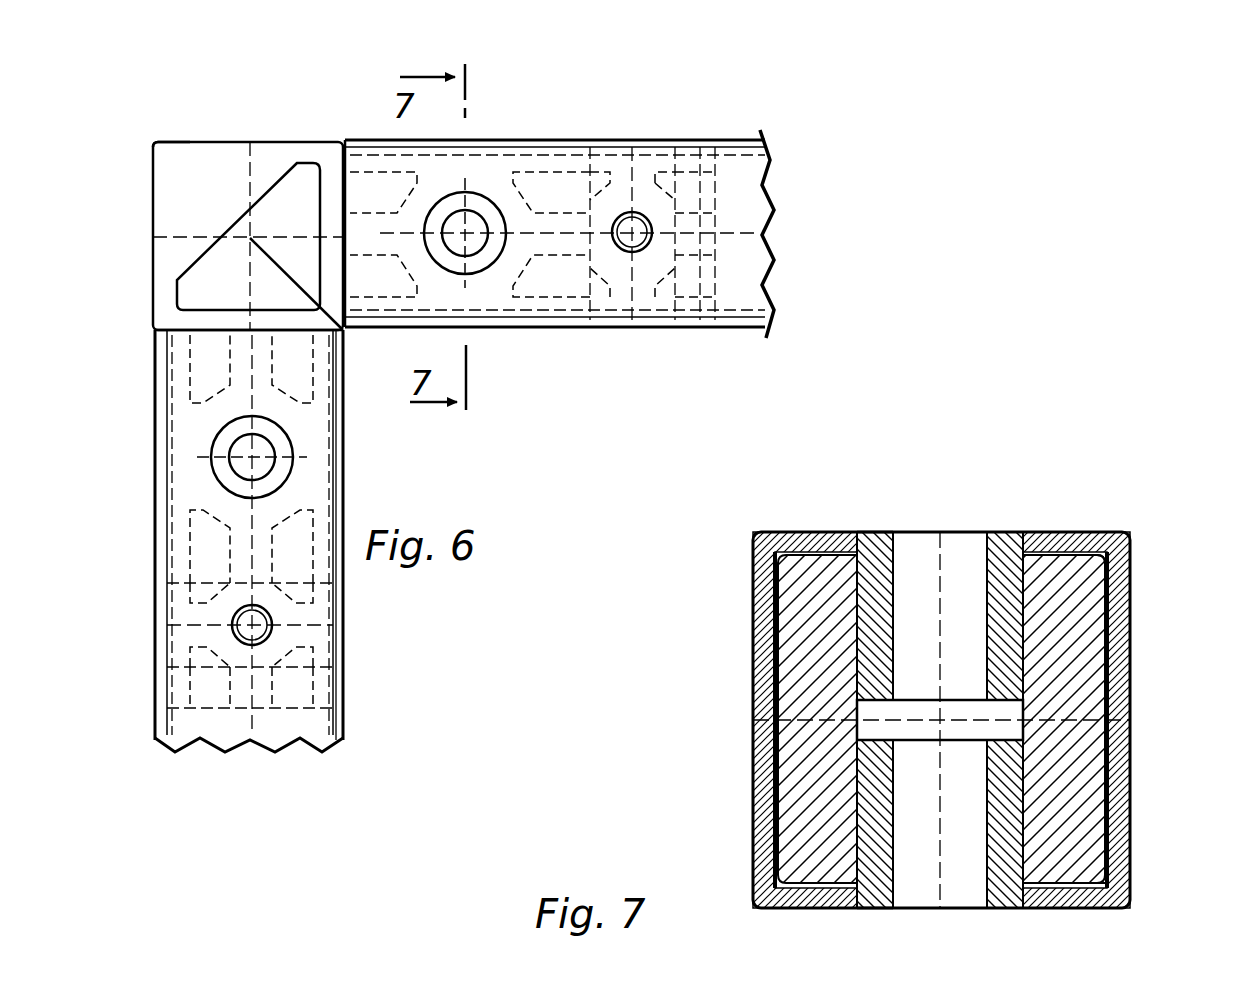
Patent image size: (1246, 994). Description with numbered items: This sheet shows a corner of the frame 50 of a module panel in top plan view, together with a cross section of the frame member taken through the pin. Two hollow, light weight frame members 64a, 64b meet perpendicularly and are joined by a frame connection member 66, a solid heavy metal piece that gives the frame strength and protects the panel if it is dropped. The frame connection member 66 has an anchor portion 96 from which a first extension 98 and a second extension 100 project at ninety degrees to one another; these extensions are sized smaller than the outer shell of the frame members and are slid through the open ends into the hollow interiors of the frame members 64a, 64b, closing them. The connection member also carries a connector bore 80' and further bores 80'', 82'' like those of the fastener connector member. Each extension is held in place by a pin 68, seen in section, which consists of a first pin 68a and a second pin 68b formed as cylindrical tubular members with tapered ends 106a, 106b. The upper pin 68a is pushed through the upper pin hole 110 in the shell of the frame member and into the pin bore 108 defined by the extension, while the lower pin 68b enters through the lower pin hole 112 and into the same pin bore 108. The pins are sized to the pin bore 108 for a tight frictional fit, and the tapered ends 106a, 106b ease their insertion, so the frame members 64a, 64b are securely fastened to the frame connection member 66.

In FIG. 6, the frame 50 is at (706, 92).
In FIG. 6, the frame member 64a is at (574, 136).
In FIG. 7, the frame member 64a is at (828, 528).
In FIG. 6, the frame member 64b is at (150, 546).
In FIG. 6, the frame connection member 66 is at (250, 138).
In FIG. 6, the pin 68 is at (482, 192).
In FIG. 7, the first pin 68a is at (1006, 526).
In FIG. 7, the second pin 68b is at (1013, 892).
In FIG. 6, the connector bore 80' is at (686, 273).
In FIG. 6, the pocket recess 80'' is at (316, 640).
In FIG. 6, the pin hole 82'' is at (409, 396).
In FIG. 6, the anchor portion 96 is at (172, 142).
In FIG. 6, the first extension 98 is at (702, 136).
In FIG. 7, the first extension 98 is at (1080, 580).
In FIG. 6, the second extension 100 is at (348, 512).
In FIG. 7, the tapered end 106a is at (862, 688).
In FIG. 7, the tapered end 106b is at (862, 750).
In FIG. 7, the pin bore 108 is at (1032, 724).
In FIG. 7, the upper pin hole 110 is at (868, 536).
In FIG. 7, the lower pin hole 112 is at (860, 895).